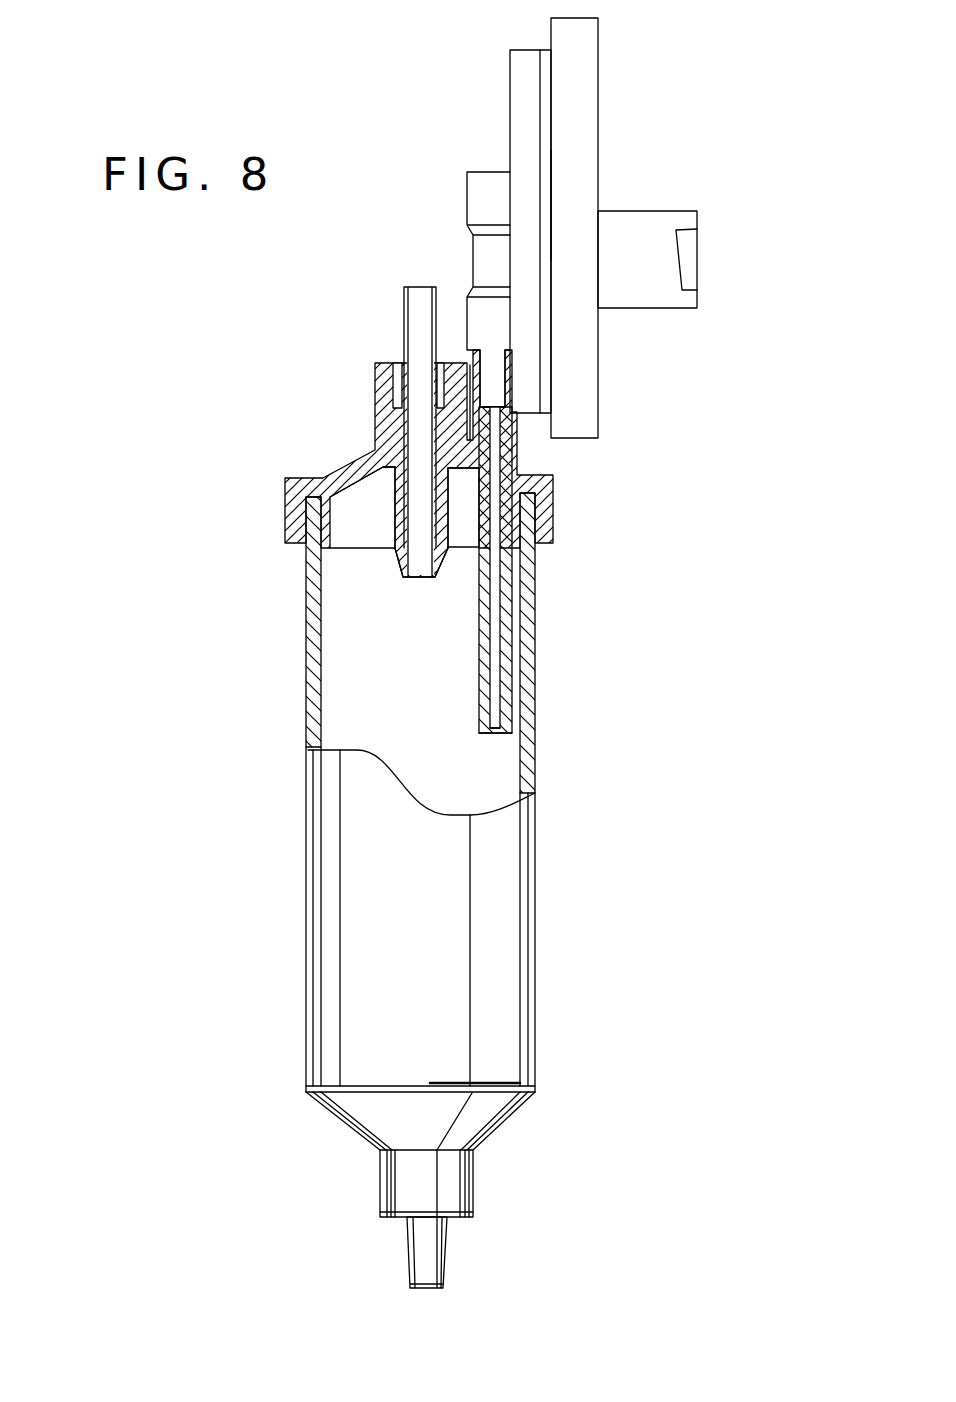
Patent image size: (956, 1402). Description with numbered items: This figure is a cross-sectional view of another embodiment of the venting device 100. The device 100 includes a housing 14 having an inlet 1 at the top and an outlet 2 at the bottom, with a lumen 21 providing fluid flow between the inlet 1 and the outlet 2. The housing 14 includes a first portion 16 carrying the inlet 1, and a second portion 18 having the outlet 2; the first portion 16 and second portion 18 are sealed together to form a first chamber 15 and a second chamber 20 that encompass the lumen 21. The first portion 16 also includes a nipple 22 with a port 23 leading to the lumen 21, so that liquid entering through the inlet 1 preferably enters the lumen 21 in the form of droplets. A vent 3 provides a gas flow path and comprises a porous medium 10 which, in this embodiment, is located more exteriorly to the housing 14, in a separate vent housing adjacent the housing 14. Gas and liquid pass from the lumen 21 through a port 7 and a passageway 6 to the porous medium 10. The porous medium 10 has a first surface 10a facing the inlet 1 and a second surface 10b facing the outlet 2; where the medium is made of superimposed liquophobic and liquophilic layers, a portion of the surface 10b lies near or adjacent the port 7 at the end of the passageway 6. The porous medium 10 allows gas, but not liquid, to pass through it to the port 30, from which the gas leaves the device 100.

The venting device 100 is at (210, 1191).
The vent 3 is at (780, 42).
The porous medium 10 is at (545, 152).
The first surface 10a is at (553, 197).
The second surface 10b is at (540, 107).
The port 30 is at (697, 255).
The housing 14 is at (170, 475).
The first portion 16 is at (345, 462).
The first chamber 15 is at (358, 500).
The nipple 22 is at (398, 540).
The port 23 is at (413, 585).
The inlet 1 is at (405, 308).
The passageway 6 is at (495, 670).
The port 7 is at (497, 733).
The second portion 18 is at (308, 935).
The lumen 21 is at (352, 823).
The second chamber 20 is at (478, 908).
The outlet 2 is at (407, 1257).